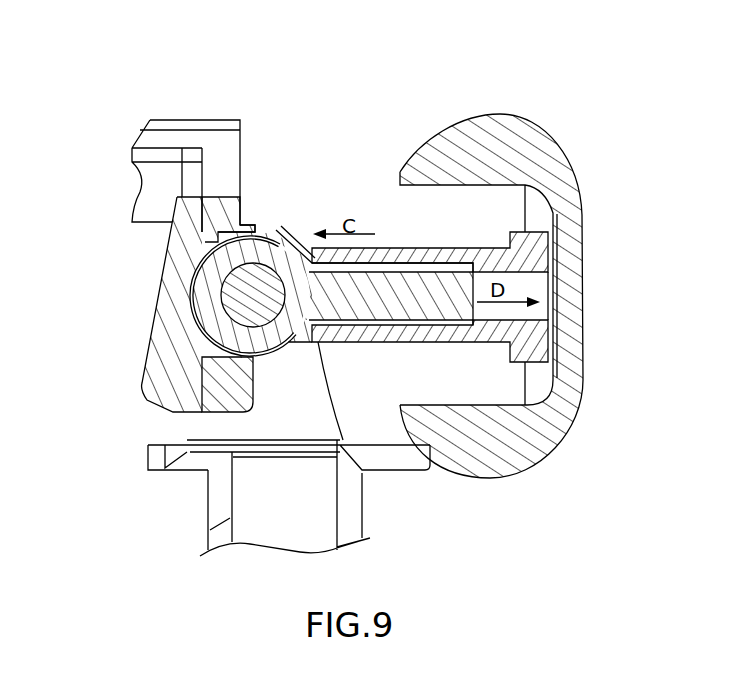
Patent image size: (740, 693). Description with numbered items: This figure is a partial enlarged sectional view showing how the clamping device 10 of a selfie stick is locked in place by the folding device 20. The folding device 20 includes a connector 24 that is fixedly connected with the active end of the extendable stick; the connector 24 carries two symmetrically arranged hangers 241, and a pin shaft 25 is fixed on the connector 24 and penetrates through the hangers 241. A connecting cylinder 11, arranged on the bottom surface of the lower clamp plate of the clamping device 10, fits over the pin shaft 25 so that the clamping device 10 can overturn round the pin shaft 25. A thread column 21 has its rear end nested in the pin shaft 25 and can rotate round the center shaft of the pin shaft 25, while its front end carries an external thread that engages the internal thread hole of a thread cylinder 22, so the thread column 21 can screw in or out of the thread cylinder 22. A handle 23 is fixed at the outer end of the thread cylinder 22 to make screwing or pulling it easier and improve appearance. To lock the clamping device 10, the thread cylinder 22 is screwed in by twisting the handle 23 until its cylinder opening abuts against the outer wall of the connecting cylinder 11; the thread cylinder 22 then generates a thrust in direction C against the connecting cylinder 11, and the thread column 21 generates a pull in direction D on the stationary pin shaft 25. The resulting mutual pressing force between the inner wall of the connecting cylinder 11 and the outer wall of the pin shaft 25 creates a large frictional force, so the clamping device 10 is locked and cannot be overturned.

The clamping device 10 is at (148, 181).
The connecting cylinder 11 is at (270, 240).
The folding device 20 is at (379, 91).
The thread column 21 is at (440, 280).
The thread cylinder 22 is at (540, 337).
The handle 23 is at (570, 204).
The connector 24 is at (204, 494).
The hanger 241 is at (262, 226).
The pin shaft 25 is at (230, 296).